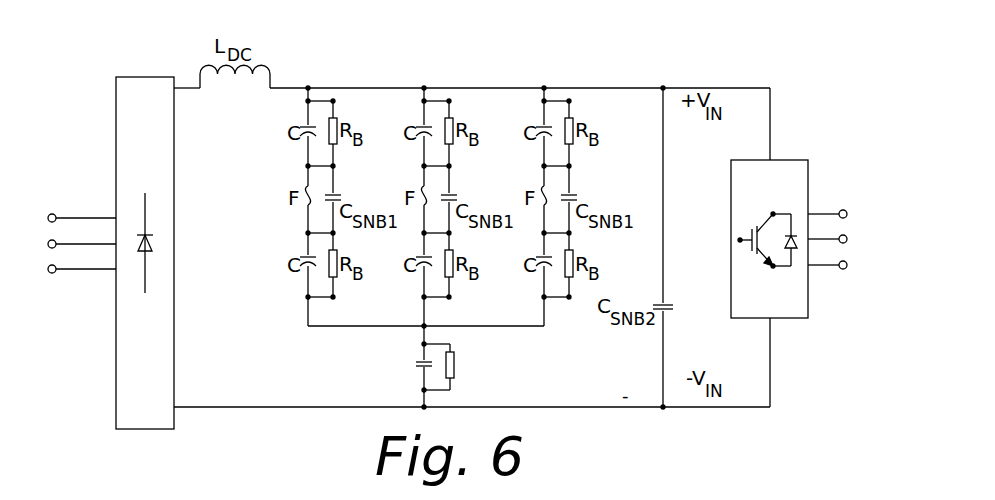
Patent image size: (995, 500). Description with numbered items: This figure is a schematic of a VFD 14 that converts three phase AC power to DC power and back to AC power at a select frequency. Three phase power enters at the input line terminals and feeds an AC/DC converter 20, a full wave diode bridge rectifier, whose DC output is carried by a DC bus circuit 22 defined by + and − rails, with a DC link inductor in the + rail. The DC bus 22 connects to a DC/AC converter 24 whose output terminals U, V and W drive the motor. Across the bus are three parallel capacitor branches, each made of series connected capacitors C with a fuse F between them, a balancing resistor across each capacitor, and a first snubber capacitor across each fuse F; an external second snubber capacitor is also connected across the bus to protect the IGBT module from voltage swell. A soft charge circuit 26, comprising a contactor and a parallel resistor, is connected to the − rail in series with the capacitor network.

The VFD 14 is at (800, 65).
The AC/DC converter 20 is at (132, 82).
The DC bus circuit 22 is at (734, 88).
The DC/AC converter 24 is at (789, 160).
The soft charge circuit 26 is at (482, 352).